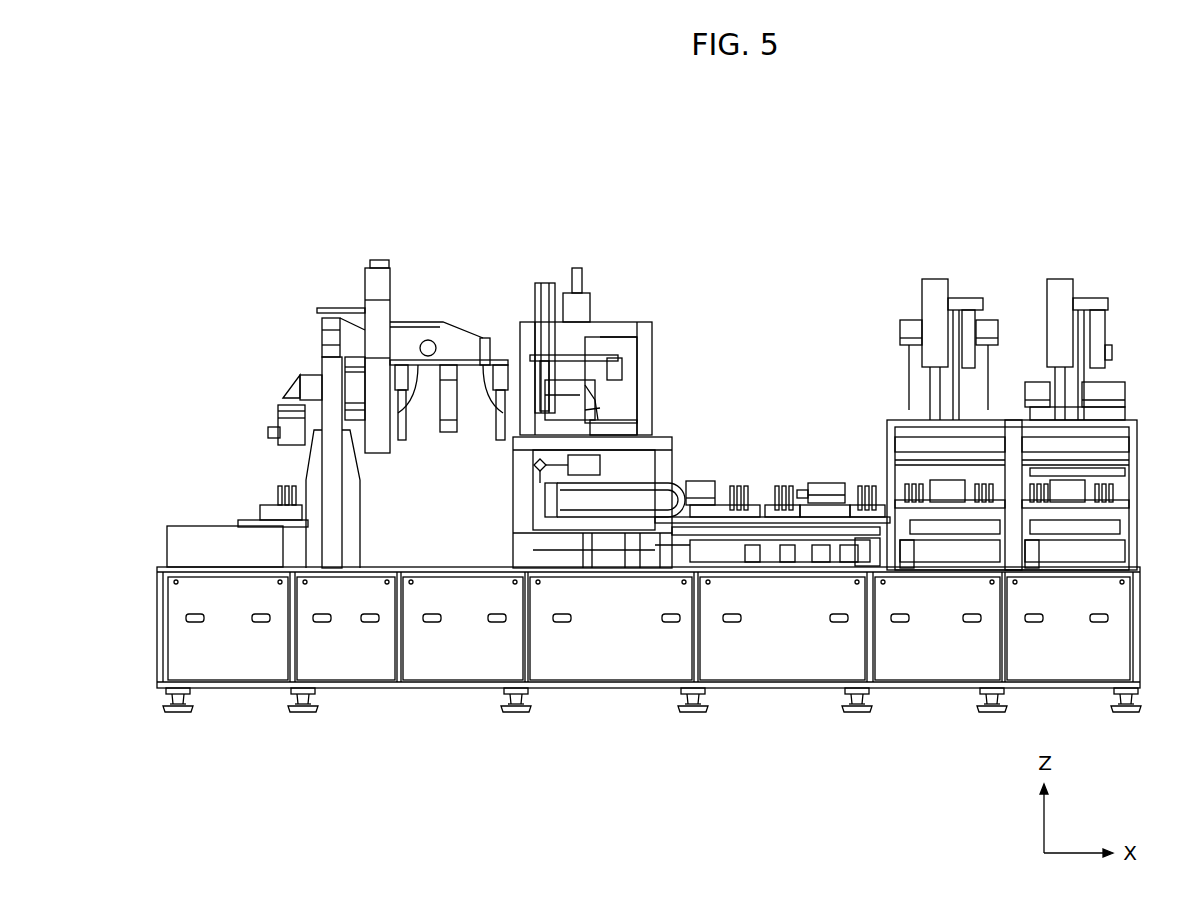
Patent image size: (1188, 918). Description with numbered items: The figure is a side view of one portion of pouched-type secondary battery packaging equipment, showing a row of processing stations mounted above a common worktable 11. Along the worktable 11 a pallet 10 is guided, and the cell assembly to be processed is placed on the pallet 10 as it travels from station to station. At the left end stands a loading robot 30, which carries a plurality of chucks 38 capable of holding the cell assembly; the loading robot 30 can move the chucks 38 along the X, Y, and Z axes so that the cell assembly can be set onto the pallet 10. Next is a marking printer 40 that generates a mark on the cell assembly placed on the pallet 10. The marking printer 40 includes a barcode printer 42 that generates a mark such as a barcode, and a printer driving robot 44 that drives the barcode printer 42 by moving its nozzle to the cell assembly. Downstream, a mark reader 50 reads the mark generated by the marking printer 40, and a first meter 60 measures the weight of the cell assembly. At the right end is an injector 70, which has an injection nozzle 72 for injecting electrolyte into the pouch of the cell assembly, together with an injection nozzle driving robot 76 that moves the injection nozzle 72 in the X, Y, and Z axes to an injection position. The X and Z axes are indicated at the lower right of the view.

The pallet 10 is at (268, 505).
The worktable 11 is at (616, 628).
The loading robot 30 is at (395, 268).
The chucks 38 is at (418, 365).
The marking printer 40 is at (724, 278).
The barcode printer 42 is at (573, 410).
The printer driving robot 44 is at (578, 310).
The mark reader 50 is at (742, 467).
The first meter 60 is at (824, 467).
The injector 70 is at (902, 284).
The injection nozzle 72 is at (905, 378).
The injection nozzle driving robot 76 is at (933, 292).